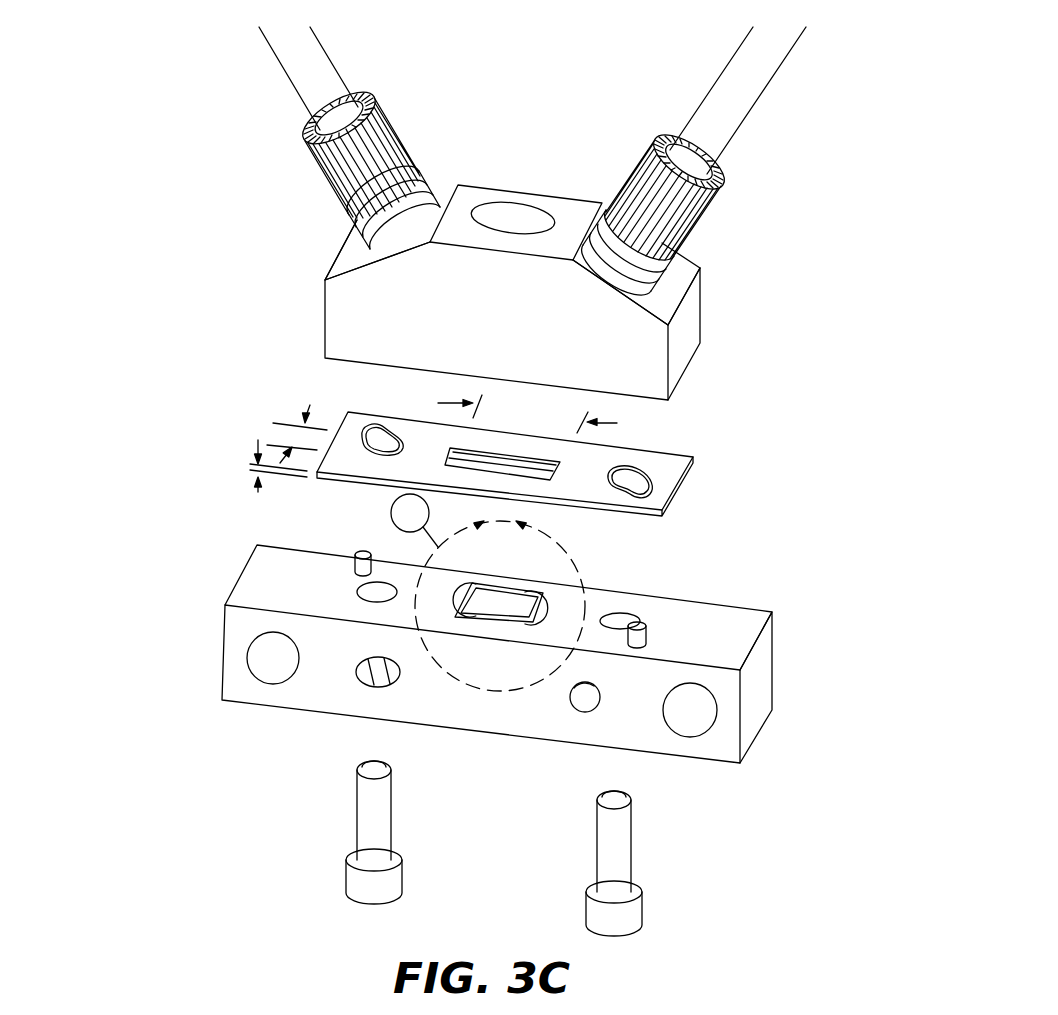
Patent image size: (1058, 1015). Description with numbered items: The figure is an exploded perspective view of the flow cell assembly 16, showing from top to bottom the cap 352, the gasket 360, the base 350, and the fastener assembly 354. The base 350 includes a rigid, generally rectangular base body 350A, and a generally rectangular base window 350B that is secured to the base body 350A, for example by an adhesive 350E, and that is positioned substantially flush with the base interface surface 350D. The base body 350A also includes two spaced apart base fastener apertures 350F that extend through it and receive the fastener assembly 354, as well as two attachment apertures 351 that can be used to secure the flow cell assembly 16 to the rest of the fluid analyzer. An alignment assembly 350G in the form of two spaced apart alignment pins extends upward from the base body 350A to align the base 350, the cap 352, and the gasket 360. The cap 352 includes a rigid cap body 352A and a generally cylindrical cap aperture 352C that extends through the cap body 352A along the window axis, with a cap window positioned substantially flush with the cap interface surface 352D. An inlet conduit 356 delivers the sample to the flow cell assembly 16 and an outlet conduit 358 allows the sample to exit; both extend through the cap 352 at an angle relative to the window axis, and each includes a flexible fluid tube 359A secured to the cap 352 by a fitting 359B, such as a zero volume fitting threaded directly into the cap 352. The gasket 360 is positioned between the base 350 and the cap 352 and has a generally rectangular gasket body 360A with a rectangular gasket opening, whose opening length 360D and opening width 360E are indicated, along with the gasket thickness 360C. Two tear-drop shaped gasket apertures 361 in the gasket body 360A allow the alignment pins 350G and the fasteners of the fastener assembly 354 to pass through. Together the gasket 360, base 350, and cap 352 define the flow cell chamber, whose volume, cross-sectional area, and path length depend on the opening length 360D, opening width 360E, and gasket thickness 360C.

The flow cell assembly 16 is at (560, 105).
The base 350 is at (210, 640).
The base body 350A is at (314, 695).
The base window 350B is at (513, 610).
The base interface surface 350D is at (247, 590).
The adhesive 350E is at (468, 622).
The base fastener apertures 350F is at (367, 588).
The alignment assembly 350G is at (655, 614).
The attachment apertures 351 is at (693, 712).
The cap 352 is at (698, 332).
The cap body 352A is at (684, 270).
The cap aperture 352C is at (513, 220).
The cap interface surface 352D is at (323, 358).
The fastener assembly 354 is at (368, 805).
The inlet conduit 356 is at (340, 55).
The outlet conduit 358 is at (725, 70).
The flexible fluid tube 359A is at (298, 68).
The fitting 359B is at (329, 180).
The gasket 360 is at (700, 484).
The gasket body 360A is at (667, 460).
The gasket thickness 360C is at (273, 479).
The opening length 360D is at (527, 414).
The opening width 360E is at (307, 421).
The gasket apertures 361 is at (640, 495).